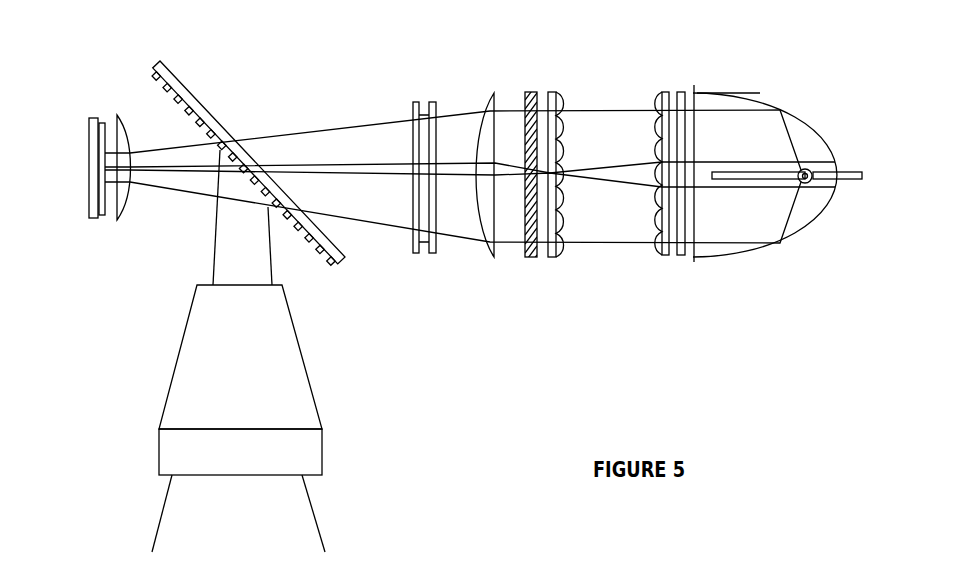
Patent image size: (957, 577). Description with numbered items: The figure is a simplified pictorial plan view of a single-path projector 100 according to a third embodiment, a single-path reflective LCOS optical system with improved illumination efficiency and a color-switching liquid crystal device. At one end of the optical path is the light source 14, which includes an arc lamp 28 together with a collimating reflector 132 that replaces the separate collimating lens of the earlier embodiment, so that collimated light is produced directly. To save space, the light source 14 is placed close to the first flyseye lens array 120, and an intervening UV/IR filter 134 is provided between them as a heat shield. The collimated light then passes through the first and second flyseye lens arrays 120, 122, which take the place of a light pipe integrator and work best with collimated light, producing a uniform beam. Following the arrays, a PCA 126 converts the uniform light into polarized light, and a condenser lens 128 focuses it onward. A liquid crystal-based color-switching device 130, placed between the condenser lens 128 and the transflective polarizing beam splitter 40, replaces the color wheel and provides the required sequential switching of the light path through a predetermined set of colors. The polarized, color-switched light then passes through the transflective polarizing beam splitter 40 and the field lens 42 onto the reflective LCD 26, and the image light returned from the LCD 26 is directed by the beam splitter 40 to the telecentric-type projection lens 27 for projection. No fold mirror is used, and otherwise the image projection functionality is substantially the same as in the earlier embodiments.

The light source 14 is at (794, 76).
The reflective liquid crystal display 26 is at (93, 219).
The telecentric-type projection lens 27 is at (322, 458).
The arc lamp 28 is at (814, 172).
The transflective polarizing beam splitter 40 is at (190, 98).
The field lens 42 is at (123, 202).
The single-path projector 100 is at (112, 362).
The first flyseye lens array 120 is at (680, 90).
The second flyseye lens array 122 is at (554, 91).
The PCA 126 is at (533, 258).
The condenser lens 128 is at (485, 106).
The liquid crystal-based color-switching device 130 is at (423, 112).
The collimating reflector 132 is at (802, 233).
The UV/IR filter 134 is at (694, 262).